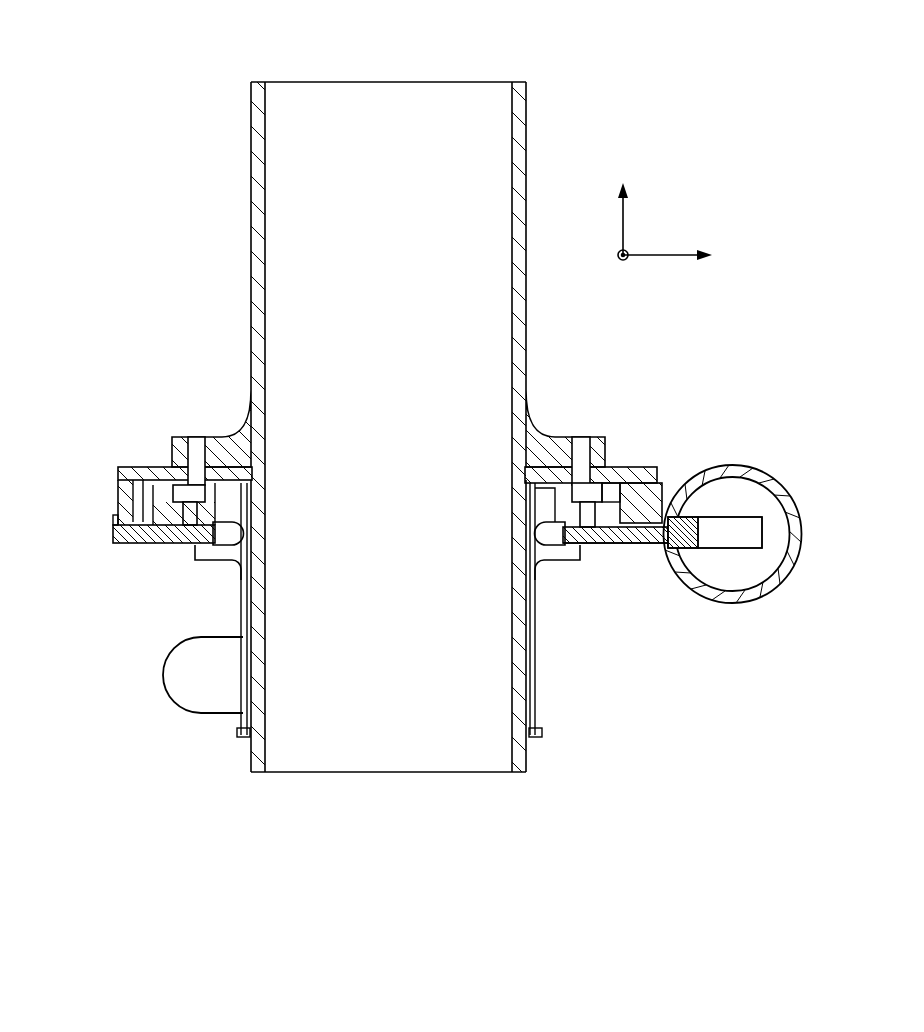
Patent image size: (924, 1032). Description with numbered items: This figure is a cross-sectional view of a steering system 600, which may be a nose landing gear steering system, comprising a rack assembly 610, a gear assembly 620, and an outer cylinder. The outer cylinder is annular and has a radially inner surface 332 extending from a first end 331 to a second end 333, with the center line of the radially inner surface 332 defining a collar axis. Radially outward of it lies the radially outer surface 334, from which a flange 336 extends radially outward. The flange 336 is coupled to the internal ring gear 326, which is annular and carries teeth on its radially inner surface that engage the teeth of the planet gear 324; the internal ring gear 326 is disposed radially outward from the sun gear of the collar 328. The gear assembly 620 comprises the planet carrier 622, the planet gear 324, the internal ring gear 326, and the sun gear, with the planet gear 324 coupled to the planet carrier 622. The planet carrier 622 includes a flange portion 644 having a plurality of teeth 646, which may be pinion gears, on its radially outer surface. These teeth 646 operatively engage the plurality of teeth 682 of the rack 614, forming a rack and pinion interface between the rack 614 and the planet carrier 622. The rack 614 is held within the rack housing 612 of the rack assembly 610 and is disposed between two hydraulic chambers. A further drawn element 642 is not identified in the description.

The steering system 600 is at (840, 117).
The second end 333 is at (285, 80).
The radially outer surface 334 is at (251, 220).
The radially inner surface 332 is at (266, 138).
The first end 331 is at (336, 773).
The flange 336 is at (172, 437).
The collar 328 is at (200, 595).
The planet gear 324 is at (615, 493).
The internal ring gear 326 is at (642, 500).
The gear assembly 620 is at (678, 394).
The arm 642 is at (612, 545).
The planet carrier 622 is at (655, 545).
The rack assembly 610 is at (756, 433).
The rack housing 612 is at (793, 555).
The plurality of teeth 646 is at (712, 548).
The plurality of teeth 682 is at (706, 528).
The flange portion 644 is at (692, 538).
The rack 614 is at (740, 543).